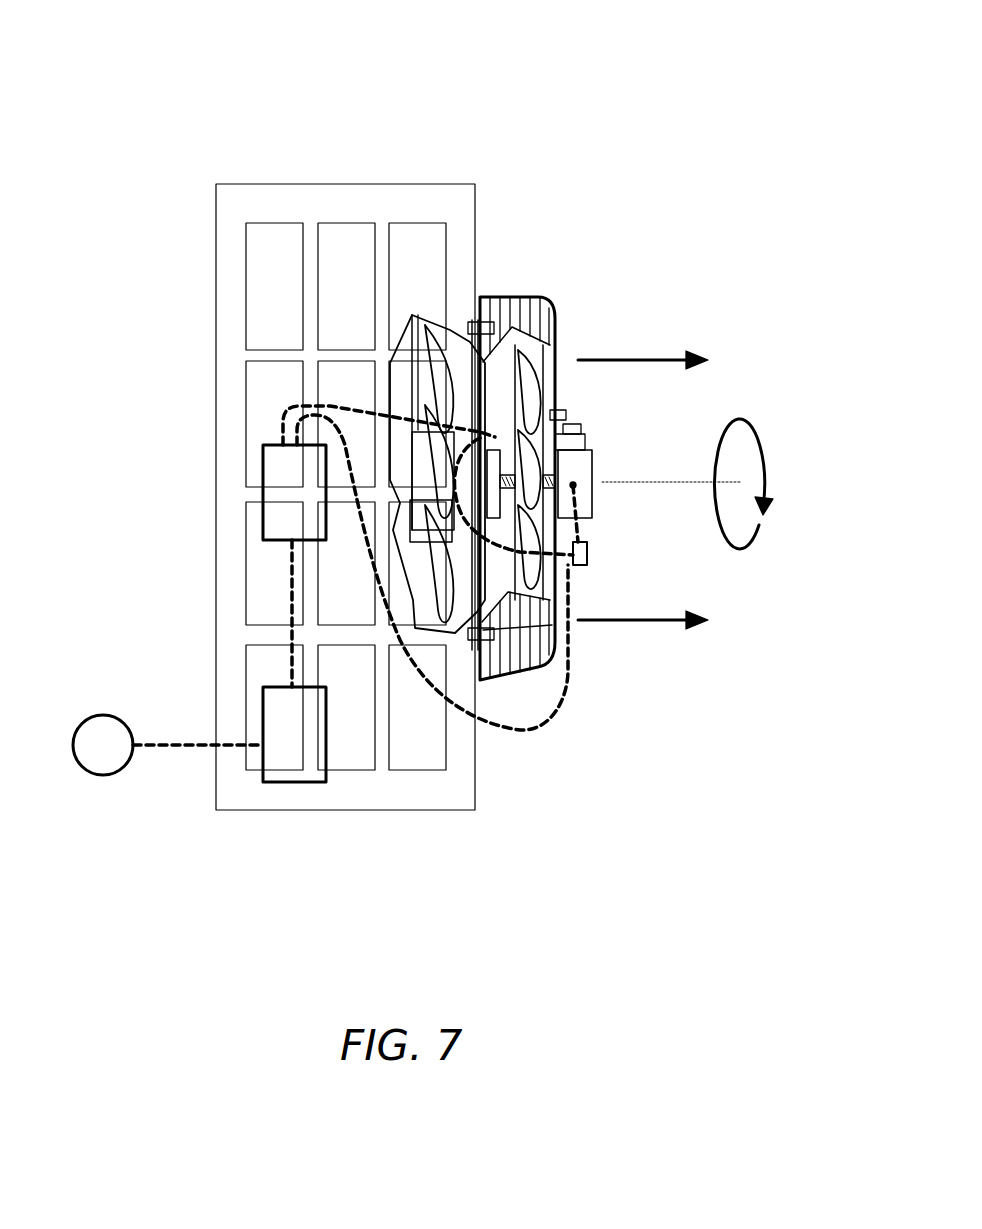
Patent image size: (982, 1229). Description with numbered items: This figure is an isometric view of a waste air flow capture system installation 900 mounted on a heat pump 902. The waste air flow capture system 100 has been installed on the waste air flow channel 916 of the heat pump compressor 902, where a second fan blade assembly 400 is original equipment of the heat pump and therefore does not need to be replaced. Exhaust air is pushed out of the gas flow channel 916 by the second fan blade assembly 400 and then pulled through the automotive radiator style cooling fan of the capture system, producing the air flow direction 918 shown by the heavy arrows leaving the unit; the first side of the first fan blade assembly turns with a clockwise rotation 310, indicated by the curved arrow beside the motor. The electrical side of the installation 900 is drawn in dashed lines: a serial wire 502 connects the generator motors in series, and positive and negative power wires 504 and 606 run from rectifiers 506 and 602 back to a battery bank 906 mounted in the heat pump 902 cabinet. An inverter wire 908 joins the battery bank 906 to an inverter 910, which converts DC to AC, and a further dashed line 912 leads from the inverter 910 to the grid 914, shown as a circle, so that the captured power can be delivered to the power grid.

The waste air flow capture system installation 900 is at (212, 146).
The heat pump 902 is at (475, 221).
The second fan blade assembly 400 is at (418, 292).
The serial wire 502 is at (458, 466).
The positive power wire 504 is at (283, 420).
The rectifier 506 is at (548, 424).
The rectifier 602 is at (587, 552).
The negative power wire 606 is at (510, 730).
The clockwise rotation 310 is at (768, 486).
The battery bank 906 is at (263, 515).
The inverter wire 908 is at (290, 613).
The inverter 910 is at (282, 785).
The wire 912 is at (170, 740).
The grid 914 is at (97, 715).
The waste air flow channel 916 is at (460, 570).
The air flow direction 918 is at (623, 360).
The waste air flow capture system 100 is at (590, 718).